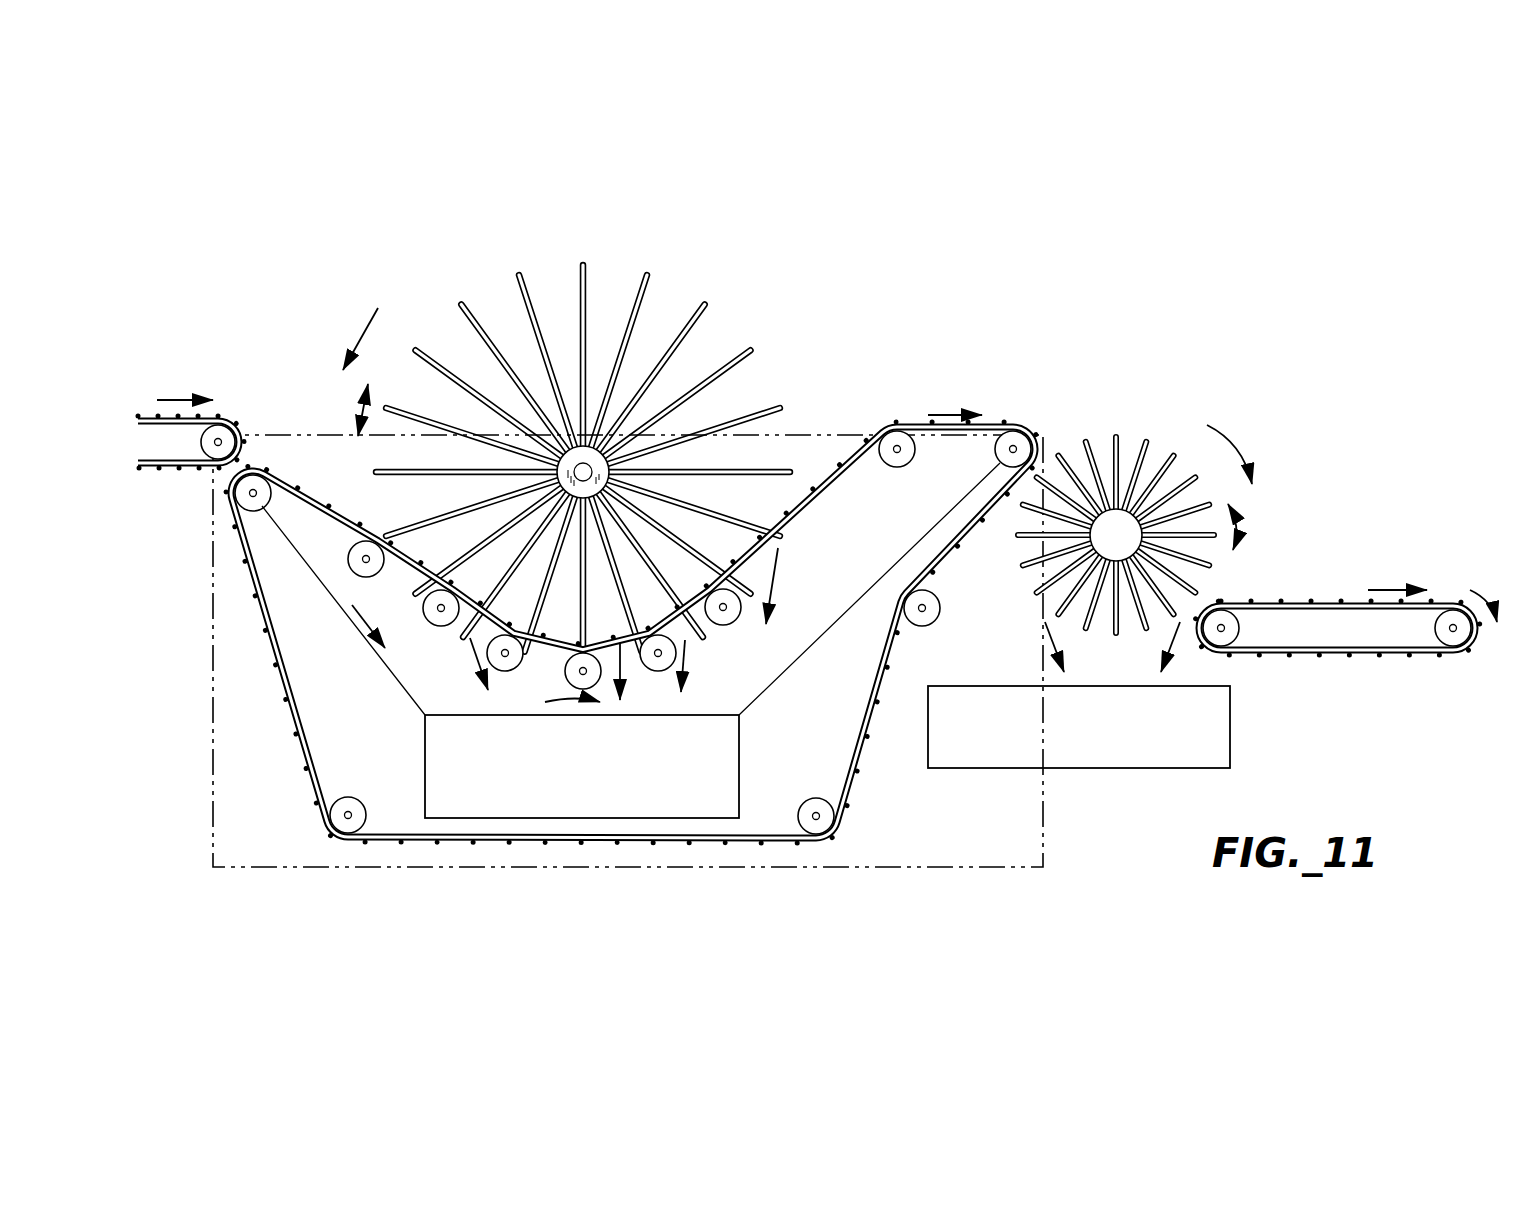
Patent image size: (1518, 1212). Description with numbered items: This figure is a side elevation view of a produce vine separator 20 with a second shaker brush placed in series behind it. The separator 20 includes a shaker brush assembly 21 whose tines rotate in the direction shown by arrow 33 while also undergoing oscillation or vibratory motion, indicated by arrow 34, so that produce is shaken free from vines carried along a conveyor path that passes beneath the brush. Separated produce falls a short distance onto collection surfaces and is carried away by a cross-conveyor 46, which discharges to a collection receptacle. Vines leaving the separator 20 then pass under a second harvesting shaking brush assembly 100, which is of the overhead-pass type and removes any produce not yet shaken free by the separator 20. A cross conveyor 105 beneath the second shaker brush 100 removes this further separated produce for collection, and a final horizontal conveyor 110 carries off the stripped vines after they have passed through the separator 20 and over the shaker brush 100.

The produce separator 20 is at (207, 778).
The shaker brush assembly 21 is at (852, 338).
The direction of rotation arrow 33 is at (366, 332).
The oscillation arrow 34 is at (361, 414).
The cross-conveyor 46 is at (739, 825).
The second harvesting shaking brush assembly 100 is at (1133, 398).
The cross conveyor 105 is at (1117, 768).
The final horizontal conveyor 110 is at (1348, 652).